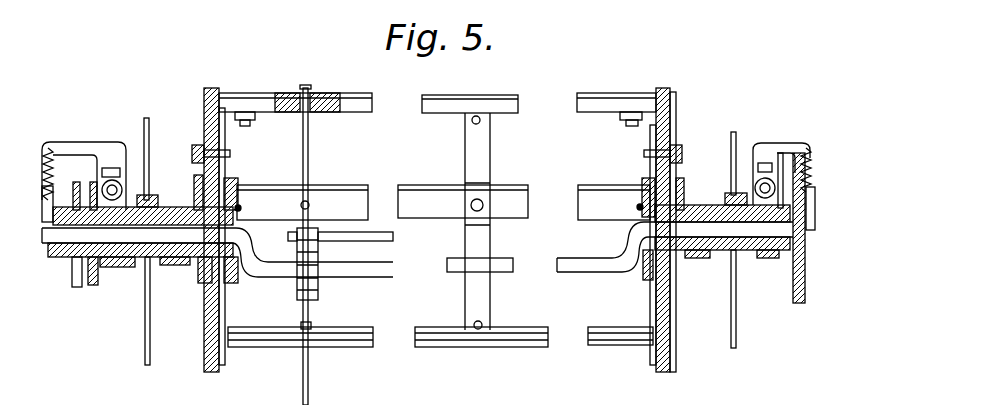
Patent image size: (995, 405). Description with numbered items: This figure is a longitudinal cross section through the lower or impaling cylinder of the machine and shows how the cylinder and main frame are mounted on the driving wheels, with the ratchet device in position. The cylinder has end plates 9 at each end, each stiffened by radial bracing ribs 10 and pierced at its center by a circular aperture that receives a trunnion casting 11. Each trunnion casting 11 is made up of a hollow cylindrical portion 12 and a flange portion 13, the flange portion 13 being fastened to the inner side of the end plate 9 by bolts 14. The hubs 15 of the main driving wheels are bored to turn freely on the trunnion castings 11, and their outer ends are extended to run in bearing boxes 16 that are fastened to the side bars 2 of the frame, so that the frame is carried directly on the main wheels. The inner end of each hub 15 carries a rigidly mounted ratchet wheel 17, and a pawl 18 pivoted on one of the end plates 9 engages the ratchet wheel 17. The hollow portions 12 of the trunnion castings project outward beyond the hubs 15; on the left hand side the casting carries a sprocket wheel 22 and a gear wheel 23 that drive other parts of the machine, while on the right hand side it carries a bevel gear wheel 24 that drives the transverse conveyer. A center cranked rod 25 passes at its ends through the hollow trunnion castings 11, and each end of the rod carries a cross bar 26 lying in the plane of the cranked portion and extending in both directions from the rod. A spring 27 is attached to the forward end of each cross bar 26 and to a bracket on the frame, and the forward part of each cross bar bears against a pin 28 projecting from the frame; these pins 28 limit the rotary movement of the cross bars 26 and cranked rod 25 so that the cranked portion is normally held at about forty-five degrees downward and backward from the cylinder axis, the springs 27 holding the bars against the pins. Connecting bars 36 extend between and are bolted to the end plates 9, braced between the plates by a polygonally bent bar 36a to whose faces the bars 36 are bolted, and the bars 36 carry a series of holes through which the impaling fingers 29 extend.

The side bar 2 is at (125, 185).
The end plate 9 is at (212, 92).
The radial bracing rib 10 is at (223, 173).
The trunnion casting 11 is at (238, 282).
The hollow cylindrical portion 12 is at (173, 263).
The flange portion 13 is at (248, 188).
The bolt 14 is at (237, 212).
The hub 15 is at (167, 207).
The bearing box 16 is at (115, 262).
The ratchet wheel 17 is at (196, 176).
The pawl 18 is at (200, 145).
The sprocket wheel 22 is at (92, 290).
The gear wheel 23 is at (75, 268).
The bevel gear wheel 24 is at (822, 230).
The center cranked rod 25 is at (363, 264).
The cross bar 26 is at (45, 196).
The spring 27 is at (47, 162).
The pin 28 is at (58, 188).
The finger 29 is at (306, 388).
The connecting bar 36 is at (272, 87).
The polygonally bent bar 36a is at (490, 278).